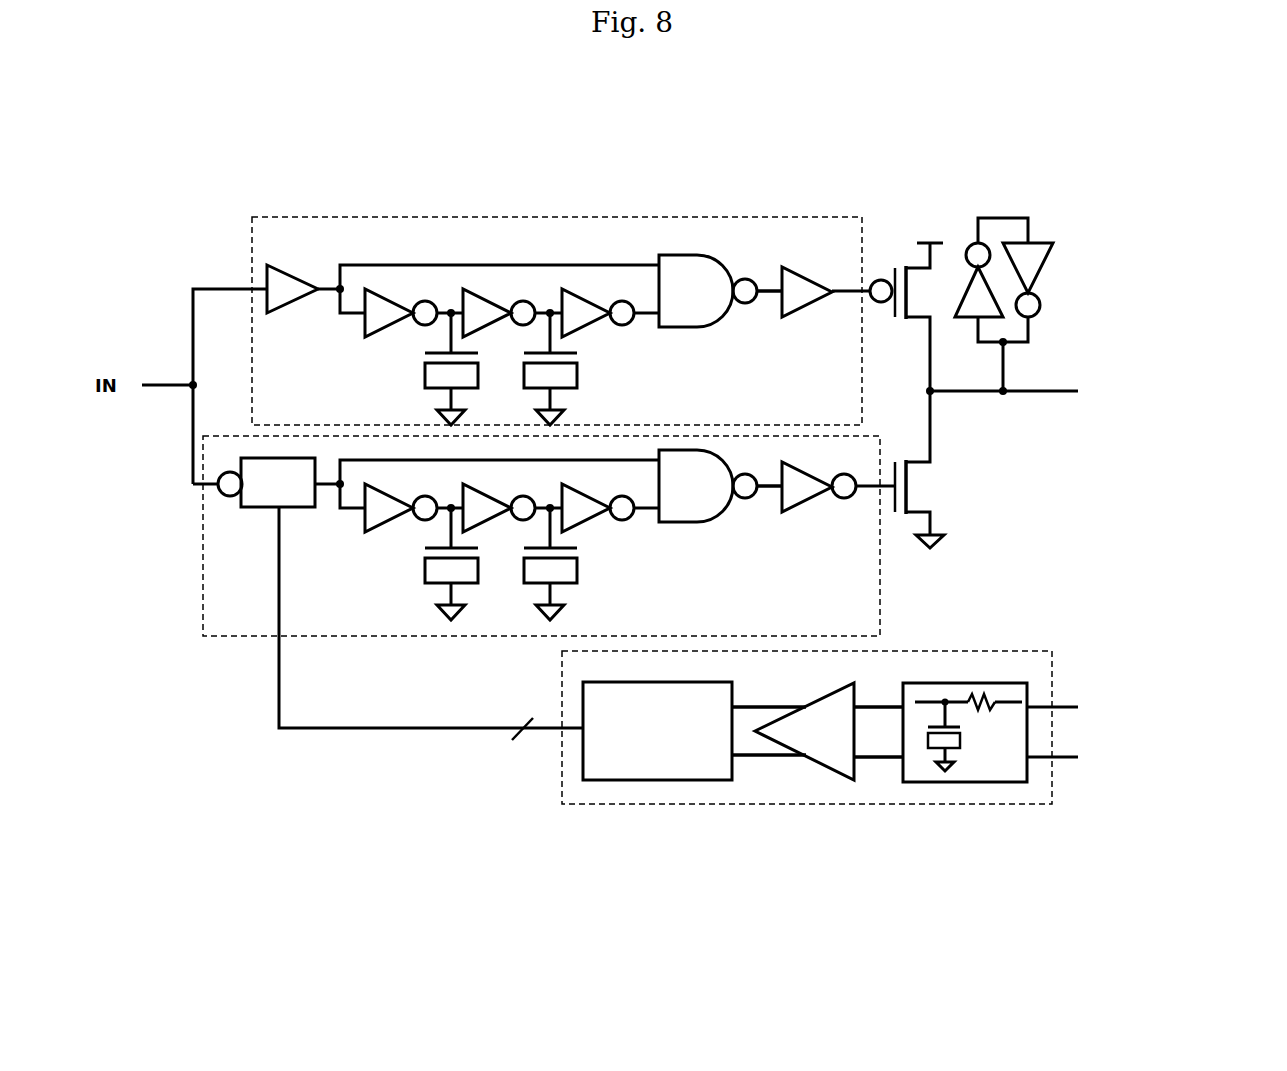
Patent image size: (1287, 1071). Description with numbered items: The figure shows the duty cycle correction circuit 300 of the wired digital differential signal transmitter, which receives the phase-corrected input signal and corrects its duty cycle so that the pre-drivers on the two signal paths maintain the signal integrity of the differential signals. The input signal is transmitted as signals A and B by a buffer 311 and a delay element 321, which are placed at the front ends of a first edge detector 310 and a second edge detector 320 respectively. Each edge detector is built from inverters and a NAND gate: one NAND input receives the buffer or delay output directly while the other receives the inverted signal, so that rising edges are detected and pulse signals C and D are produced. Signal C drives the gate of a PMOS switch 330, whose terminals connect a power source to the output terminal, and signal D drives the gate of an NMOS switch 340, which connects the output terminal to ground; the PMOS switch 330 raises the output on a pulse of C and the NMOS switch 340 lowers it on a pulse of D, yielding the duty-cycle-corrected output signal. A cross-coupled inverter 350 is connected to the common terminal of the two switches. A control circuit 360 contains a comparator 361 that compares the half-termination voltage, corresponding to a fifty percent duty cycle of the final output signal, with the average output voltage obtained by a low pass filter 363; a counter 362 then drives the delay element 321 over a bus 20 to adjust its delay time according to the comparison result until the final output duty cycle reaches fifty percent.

The duty cycle correction circuit 300 is at (1069, 106).
The first edge detector 310 is at (595, 218).
The buffer 311 is at (290, 272).
The second edge detector 320 is at (880, 595).
The delay element 321 is at (262, 507).
The PMOS switch 330 is at (884, 261).
The NMOS switch 340 is at (930, 489).
The cross-coupled inverter 350 is at (1058, 233).
The control circuit 360 is at (1002, 807).
The comparator 361 is at (815, 762).
The counter 362 is at (647, 780).
The low pass filter 363 is at (972, 782).
The control signal bus 20 is at (522, 717).